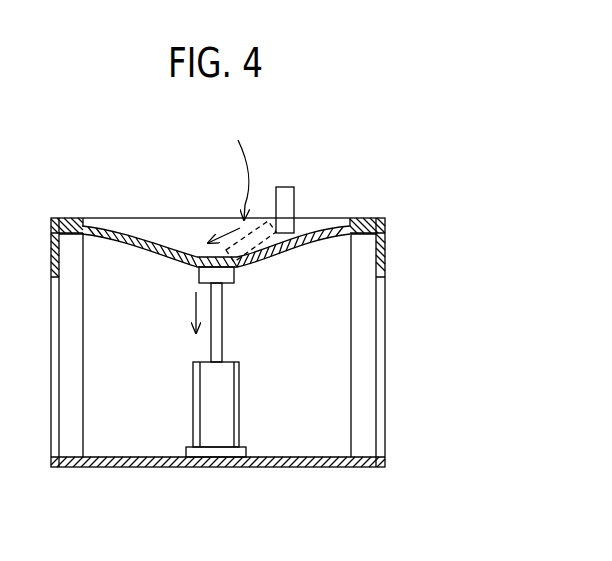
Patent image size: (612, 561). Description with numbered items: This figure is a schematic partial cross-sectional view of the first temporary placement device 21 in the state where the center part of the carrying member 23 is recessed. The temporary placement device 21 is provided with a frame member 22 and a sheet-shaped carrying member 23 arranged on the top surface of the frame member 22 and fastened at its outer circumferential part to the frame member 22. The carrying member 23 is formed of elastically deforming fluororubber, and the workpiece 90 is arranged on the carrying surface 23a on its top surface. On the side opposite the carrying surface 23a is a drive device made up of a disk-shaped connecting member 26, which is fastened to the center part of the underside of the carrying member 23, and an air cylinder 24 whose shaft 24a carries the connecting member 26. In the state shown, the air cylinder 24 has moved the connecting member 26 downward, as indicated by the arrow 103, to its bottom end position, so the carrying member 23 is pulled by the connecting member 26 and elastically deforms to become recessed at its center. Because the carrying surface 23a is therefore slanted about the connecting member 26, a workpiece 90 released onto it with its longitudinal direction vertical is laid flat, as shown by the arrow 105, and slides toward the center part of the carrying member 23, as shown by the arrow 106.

The first temporary placement device 21 is at (368, 163).
The frame member 22 is at (75, 462).
The carrying member 23 is at (363, 218).
The carrying surface 23a is at (135, 225).
The air cylinder 24 is at (239, 413).
The shaft 24a is at (222, 338).
The connecting member 26 is at (234, 276).
The workpiece 90 is at (286, 187).
The arrow 103 is at (196, 303).
The arrow 105 is at (236, 168).
The arrow 106 is at (224, 226).